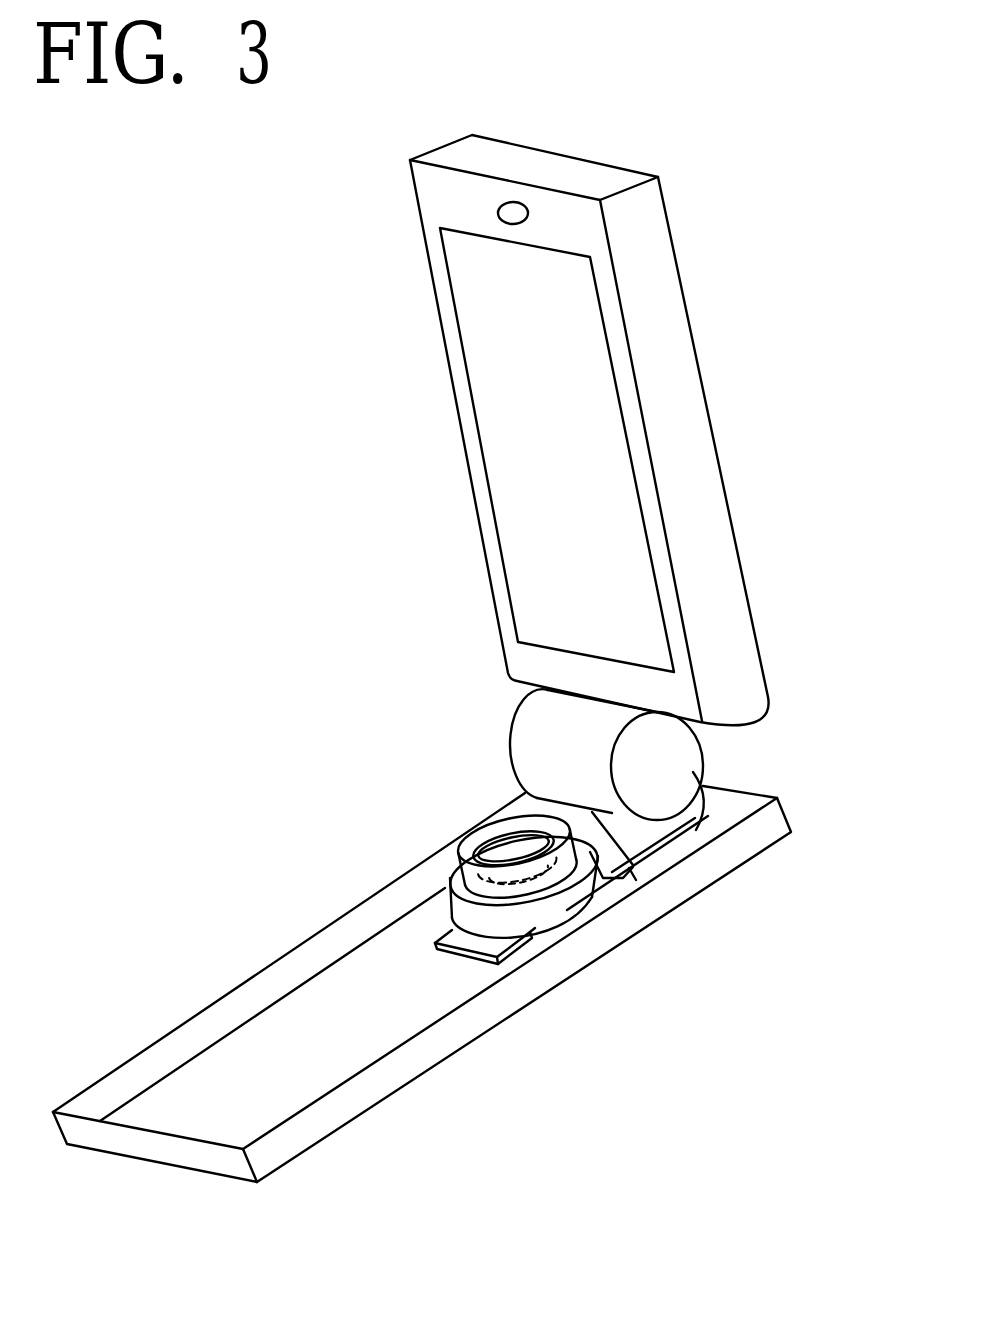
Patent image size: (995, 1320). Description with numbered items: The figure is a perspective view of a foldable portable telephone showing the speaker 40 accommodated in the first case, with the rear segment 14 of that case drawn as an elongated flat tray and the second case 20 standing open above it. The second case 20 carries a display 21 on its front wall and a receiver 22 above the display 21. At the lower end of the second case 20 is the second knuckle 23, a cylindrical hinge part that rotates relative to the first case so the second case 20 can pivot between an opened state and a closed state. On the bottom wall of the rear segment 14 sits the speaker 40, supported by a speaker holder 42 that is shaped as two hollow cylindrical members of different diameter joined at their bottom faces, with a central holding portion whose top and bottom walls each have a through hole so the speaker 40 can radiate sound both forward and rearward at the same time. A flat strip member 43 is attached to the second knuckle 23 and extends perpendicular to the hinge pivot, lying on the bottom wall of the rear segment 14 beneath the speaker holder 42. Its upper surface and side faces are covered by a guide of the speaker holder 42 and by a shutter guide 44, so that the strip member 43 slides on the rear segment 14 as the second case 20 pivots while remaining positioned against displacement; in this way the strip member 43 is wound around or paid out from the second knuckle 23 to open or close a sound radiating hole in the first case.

The rear segment 14 is at (494, 1001).
The second case 20 is at (697, 395).
The display 21 is at (502, 437).
The receiver 22 is at (507, 217).
The second knuckle 23 is at (678, 768).
The speaker 40 is at (548, 887).
The speaker holder 42 is at (460, 885).
The strip member 43 is at (453, 937).
The shutter guide 44 is at (637, 835).